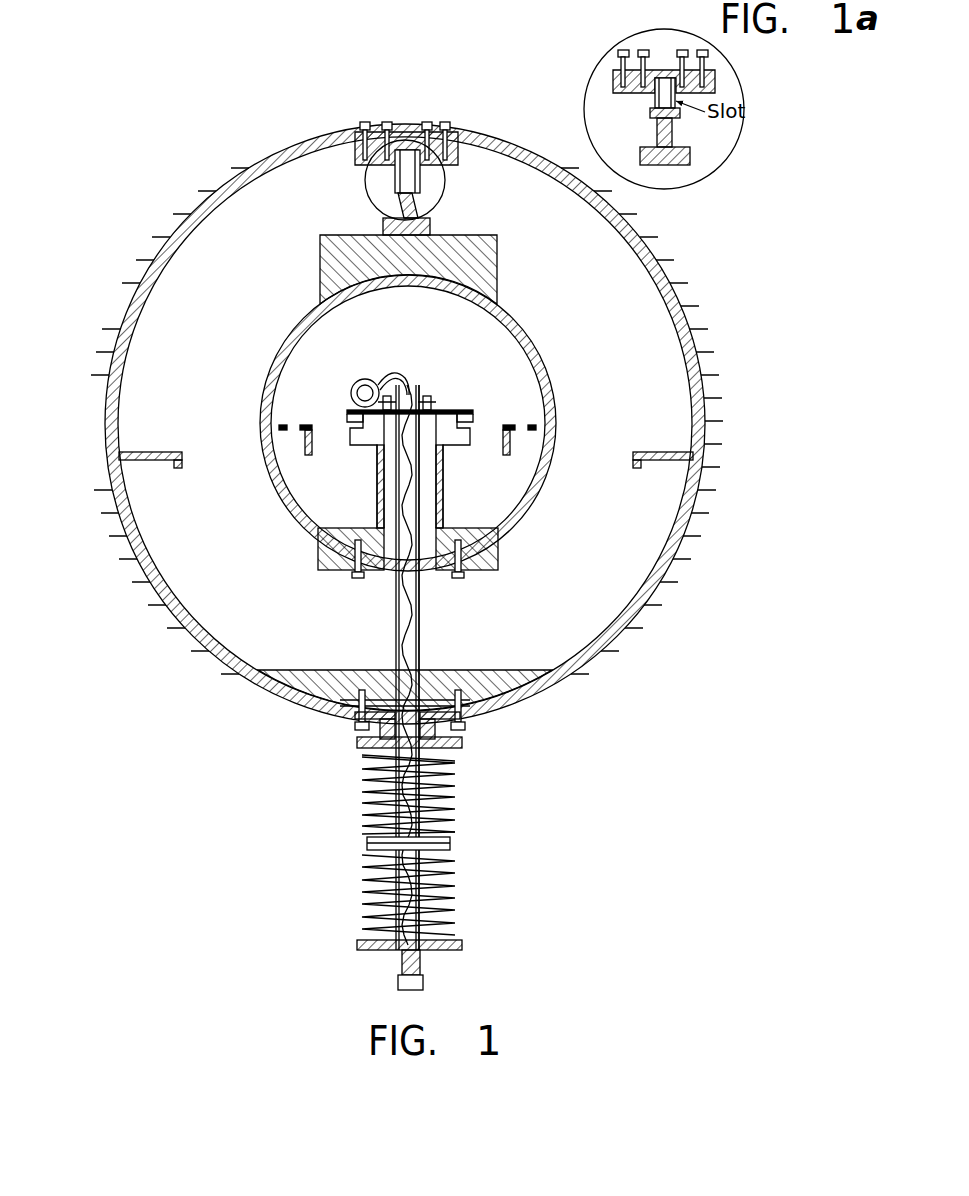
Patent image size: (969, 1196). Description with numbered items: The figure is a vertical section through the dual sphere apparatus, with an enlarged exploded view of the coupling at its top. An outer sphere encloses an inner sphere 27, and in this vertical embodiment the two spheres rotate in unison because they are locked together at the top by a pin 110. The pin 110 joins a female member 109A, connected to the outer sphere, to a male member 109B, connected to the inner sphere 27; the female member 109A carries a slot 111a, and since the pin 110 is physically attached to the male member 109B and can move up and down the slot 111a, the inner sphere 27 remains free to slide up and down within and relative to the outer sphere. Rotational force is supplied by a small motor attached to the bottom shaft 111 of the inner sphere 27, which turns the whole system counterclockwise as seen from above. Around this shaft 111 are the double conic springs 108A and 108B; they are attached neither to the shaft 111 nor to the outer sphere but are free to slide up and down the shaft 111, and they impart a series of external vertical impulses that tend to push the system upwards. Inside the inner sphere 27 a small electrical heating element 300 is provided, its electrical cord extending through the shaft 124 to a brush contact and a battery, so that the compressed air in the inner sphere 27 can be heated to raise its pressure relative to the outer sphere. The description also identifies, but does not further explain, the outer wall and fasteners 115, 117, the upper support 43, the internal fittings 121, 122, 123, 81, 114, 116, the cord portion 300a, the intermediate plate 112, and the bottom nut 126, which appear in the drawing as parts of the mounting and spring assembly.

In FIG. 1, the slot 111a is at (370, 134).
In FIG. 1, the bolts 117 is at (392, 130).
In FIG. 1, the outer shell 115 is at (470, 146).
In FIG. 1, the pin 110 is at (420, 183).
In FIG. 1A, the pin 110 is at (652, 110).
In FIG. 1, the female member 109A is at (398, 180).
In FIG. 1, the male member 109B is at (422, 212).
In FIG. 1, the support block 43 is at (497, 268).
In FIG. 1, the electrical heating element 300 is at (350, 388).
In FIG. 1, the inner sphere 27 is at (553, 356).
In FIG. 1, the mounting plate 121 is at (342, 427).
In FIG. 1, the shelf 122 is at (150, 462).
In FIG. 1, the bracket 123 is at (386, 572).
In FIG. 1, the bracket base 81 is at (393, 572).
In FIG. 1, the shaft 111 is at (427, 605).
In FIG. 1, the tube wall 114 is at (427, 630).
In FIG. 1, the cable lower portion 300a is at (416, 652).
In FIG. 1, the bottom plate 116 is at (500, 700).
In FIG. 1, the double conic spring 108A is at (456, 790).
In FIG. 1, the intermediate plate 112 is at (392, 823).
In FIG. 1, the double conic spring 108B is at (456, 886).
In FIG. 1, the shaft 124 is at (406, 915).
In FIG. 1, the nut 126 is at (425, 978).